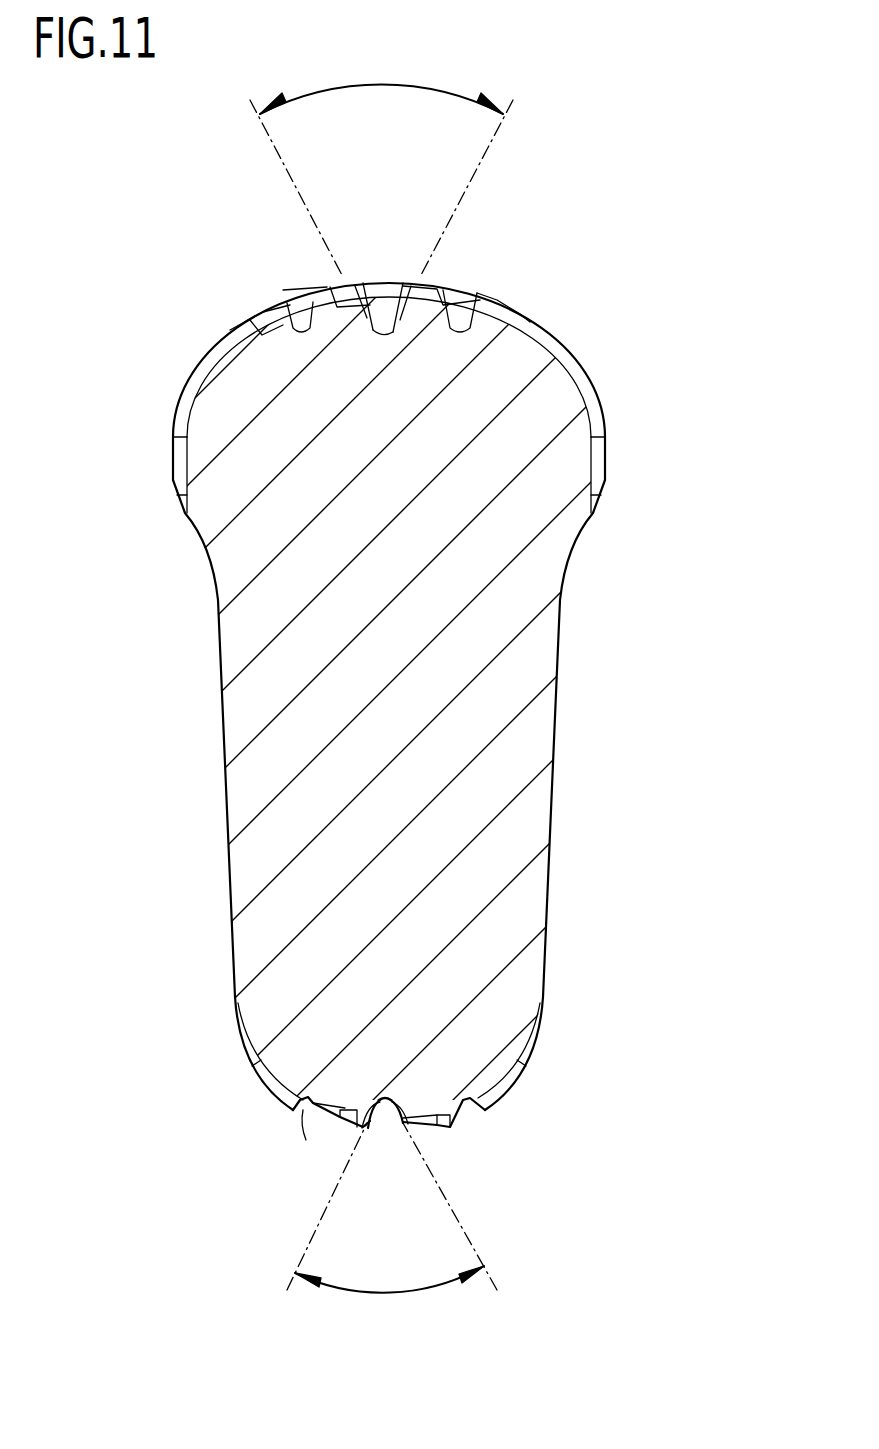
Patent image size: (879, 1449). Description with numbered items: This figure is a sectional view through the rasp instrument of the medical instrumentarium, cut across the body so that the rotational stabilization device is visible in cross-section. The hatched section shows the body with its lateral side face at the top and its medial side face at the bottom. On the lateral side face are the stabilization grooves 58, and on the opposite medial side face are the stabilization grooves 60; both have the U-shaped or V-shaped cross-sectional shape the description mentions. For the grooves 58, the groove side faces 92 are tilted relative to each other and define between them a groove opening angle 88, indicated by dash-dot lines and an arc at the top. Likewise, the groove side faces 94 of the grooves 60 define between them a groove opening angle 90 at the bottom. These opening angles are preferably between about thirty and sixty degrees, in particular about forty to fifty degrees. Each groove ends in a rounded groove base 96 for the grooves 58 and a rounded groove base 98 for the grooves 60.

The stabilization grooves 58 is at (483, 298).
The stabilization grooves 60 is at (303, 1110).
The groove opening angle 88 is at (383, 85).
The groove opening angle 90 is at (383, 1293).
The groove side faces 92 is at (360, 310).
The groove side faces 94 is at (370, 1115).
The rounded groove base 96 is at (384, 328).
The rounded groove base 98 is at (384, 1100).